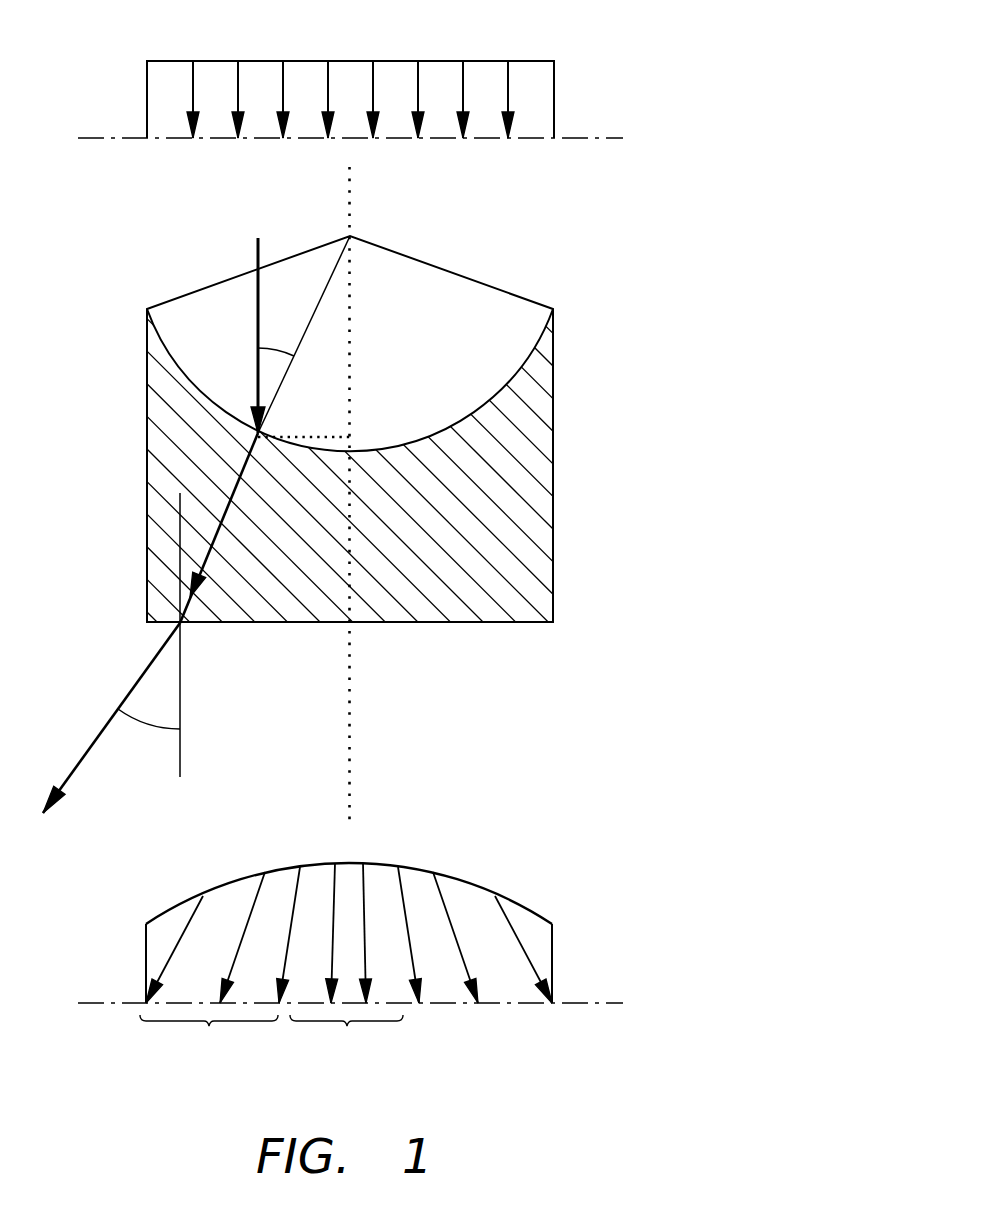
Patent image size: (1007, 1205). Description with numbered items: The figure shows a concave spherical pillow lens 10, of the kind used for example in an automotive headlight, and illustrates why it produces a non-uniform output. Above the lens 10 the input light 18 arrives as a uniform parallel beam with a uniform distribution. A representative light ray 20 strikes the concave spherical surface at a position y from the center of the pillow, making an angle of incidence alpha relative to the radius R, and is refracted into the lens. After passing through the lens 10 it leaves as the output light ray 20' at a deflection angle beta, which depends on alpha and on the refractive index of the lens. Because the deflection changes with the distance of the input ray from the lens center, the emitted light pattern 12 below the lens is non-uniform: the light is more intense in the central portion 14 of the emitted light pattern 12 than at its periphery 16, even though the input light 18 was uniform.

The concave spherical pillow lens 10 is at (553, 446).
The emitted light pattern 12 is at (576, 950).
The central portion of the emitted light pattern 14 is at (346, 1042).
The periphery of the emitted light pattern 16 is at (209, 1042).
The input light 18 is at (578, 86).
The light ray 20 is at (198, 335).
The output light ray 20' is at (132, 623).